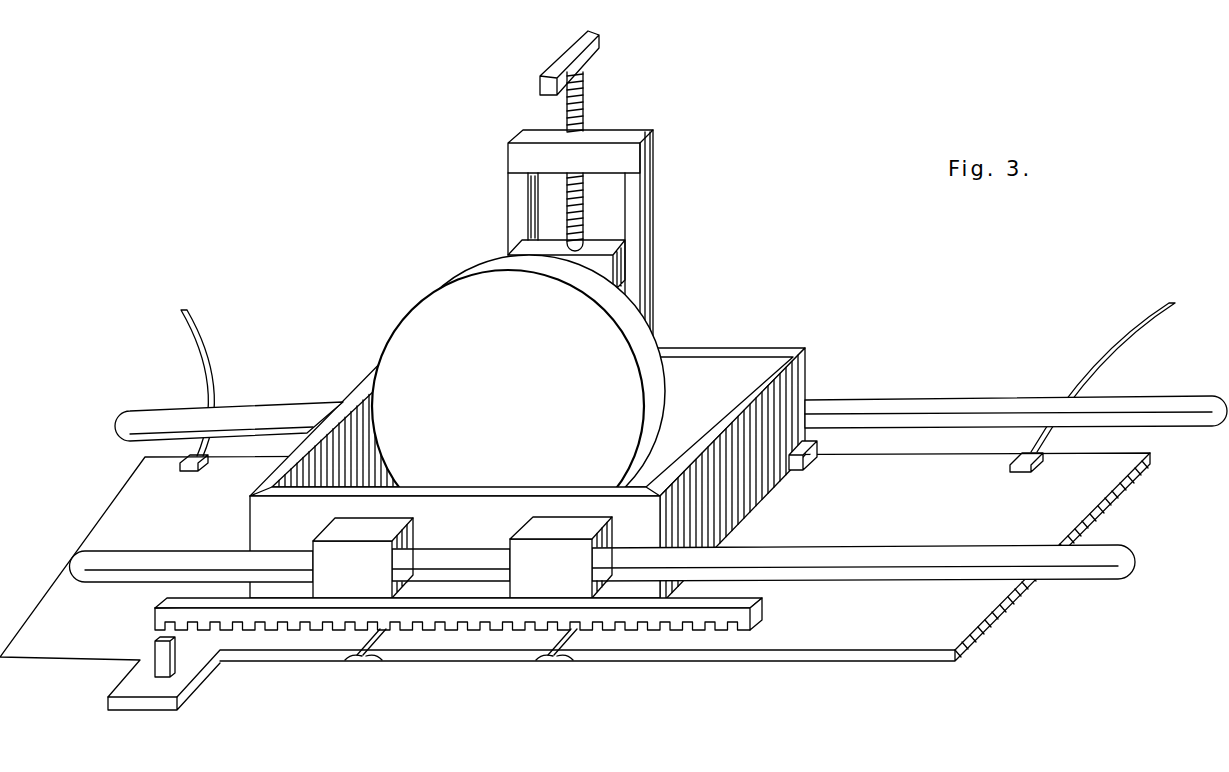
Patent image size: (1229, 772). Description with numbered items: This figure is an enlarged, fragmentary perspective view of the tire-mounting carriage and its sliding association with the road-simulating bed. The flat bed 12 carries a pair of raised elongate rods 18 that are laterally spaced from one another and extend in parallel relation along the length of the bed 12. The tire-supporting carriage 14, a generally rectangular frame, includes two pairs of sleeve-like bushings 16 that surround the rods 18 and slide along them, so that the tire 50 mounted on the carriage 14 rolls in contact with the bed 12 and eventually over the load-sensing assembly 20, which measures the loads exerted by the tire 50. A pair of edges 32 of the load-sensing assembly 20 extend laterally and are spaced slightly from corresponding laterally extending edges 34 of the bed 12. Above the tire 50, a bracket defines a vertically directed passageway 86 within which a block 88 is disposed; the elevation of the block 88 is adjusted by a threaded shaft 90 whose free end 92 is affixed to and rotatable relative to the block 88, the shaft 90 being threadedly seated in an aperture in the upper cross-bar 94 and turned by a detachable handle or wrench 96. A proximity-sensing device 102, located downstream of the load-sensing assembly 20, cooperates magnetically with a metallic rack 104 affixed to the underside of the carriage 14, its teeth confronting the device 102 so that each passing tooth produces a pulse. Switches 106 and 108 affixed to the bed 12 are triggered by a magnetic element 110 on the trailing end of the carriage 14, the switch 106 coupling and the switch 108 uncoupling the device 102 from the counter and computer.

The flat bed 12 is at (930, 505).
The tire-supporting carriage 14 is at (533, 426).
The sleeve-like bushings 16 is at (523, 530).
The raised elongate rods 18 is at (297, 412).
The load-sensing assembly 20 is at (494, 670).
The edges of the load-sensing assembly 32 is at (378, 661).
The laterally extending edges of the bed 34 is at (353, 658).
The tire 50 is at (433, 296).
The vertically directed passageway 86 is at (579, 189).
The block 88 is at (603, 265).
The threaded shaft 90 is at (584, 110).
The free end of the threaded shaft 92 is at (568, 234).
The upper cross-bar 94 is at (530, 154).
The handle or wrench 96 is at (550, 74).
The proximity-sensing device 102 is at (158, 645).
The rack 104 is at (758, 605).
The switch 106 is at (1020, 472).
The switch 108 is at (206, 474).
The magnetic element 110 is at (808, 457).